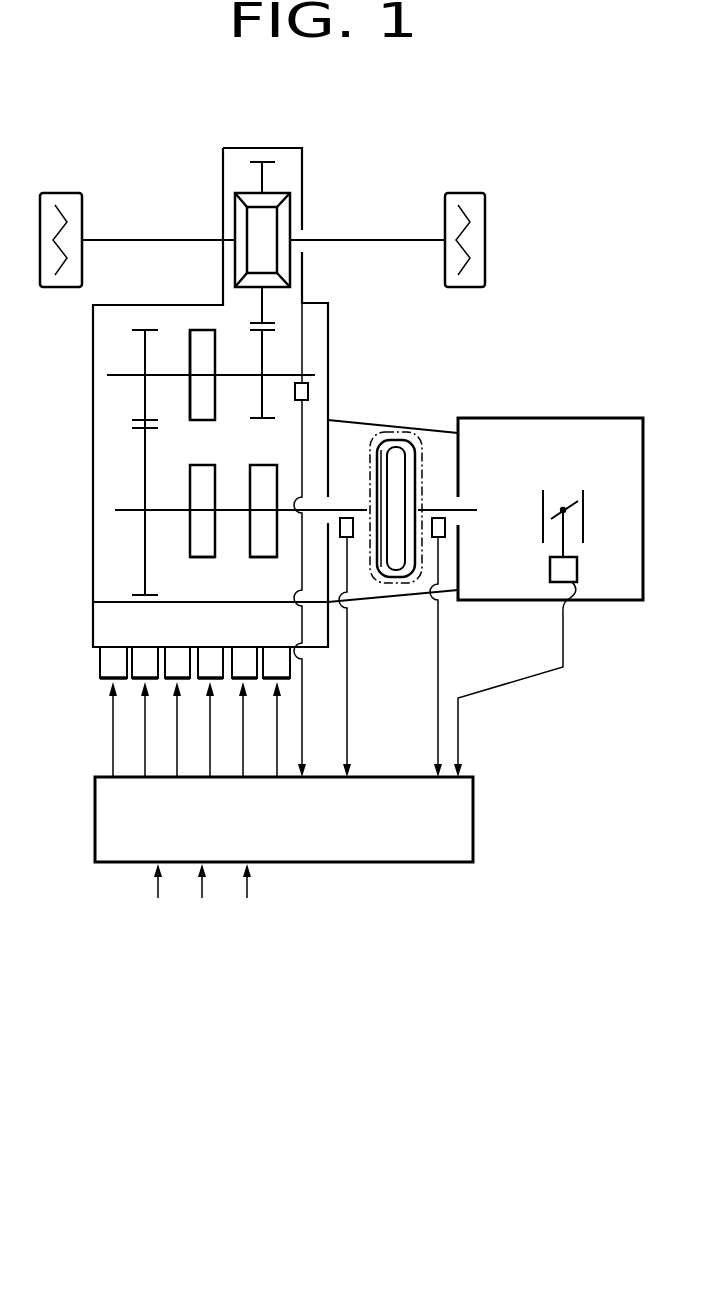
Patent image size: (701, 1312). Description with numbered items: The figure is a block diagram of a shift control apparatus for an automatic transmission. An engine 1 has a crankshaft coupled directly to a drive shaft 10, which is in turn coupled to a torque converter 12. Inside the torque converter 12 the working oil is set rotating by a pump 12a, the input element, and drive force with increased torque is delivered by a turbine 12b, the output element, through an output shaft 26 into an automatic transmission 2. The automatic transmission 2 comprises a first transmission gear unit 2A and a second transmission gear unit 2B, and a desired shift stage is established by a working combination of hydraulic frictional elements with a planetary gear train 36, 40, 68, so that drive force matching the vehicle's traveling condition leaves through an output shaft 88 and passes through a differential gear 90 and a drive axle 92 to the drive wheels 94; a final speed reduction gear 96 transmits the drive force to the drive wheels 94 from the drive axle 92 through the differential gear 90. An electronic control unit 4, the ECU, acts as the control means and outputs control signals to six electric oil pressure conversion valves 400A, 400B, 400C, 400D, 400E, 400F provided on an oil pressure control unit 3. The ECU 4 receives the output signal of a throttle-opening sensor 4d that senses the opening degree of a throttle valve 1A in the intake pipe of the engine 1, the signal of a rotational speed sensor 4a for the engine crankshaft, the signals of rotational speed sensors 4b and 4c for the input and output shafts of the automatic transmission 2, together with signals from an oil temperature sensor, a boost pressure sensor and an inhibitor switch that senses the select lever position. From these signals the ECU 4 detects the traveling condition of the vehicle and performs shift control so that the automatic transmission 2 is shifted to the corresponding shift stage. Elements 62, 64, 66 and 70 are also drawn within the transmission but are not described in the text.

The engine 1 is at (632, 418).
The throttle valve 1A is at (564, 500).
The automatic transmission 2 is at (93, 492).
The first transmission gear unit 2A is at (213, 511).
The second transmission gear unit 2B is at (182, 375).
The oil pressure control unit 3 is at (93, 622).
The electronic control unit 4 is at (95, 802).
The rotational speed sensor 4a is at (432, 540).
The rotational speed sensor 4b is at (353, 540).
The rotational speed sensor 4c is at (308, 390).
The throttle-opening sensor 4d is at (556, 582).
The drive shaft 10 is at (433, 464).
The torque converter 12 is at (392, 440).
The pump 12a is at (420, 452).
The turbine 12b is at (382, 440).
The output shaft 26 is at (343, 507).
The planetary gear train 36 is at (263, 557).
The planetary gear train 40 is at (203, 557).
The intermediate shaft 62 is at (118, 512).
The brake 64 is at (140, 430).
The brake 66 is at (130, 415).
The planetary gear train 68 is at (205, 420).
The clutch 70 is at (118, 372).
The output shaft 88 is at (288, 372).
The differential gear 90 is at (288, 190).
The drive axle 92 is at (157, 238).
The drive wheels 94 is at (485, 222).
The final speed reduction gear 96 is at (277, 310).
The electric oil pressure conversion valve 400A is at (106, 684).
The electric oil pressure conversion valve 400B is at (138, 684).
The electric oil pressure conversion valve 400C is at (170, 684).
The electric oil pressure conversion valve 400D is at (203, 684).
The electric oil pressure conversion valve 400E is at (236, 684).
The electric oil pressure conversion valve 400F is at (270, 684).